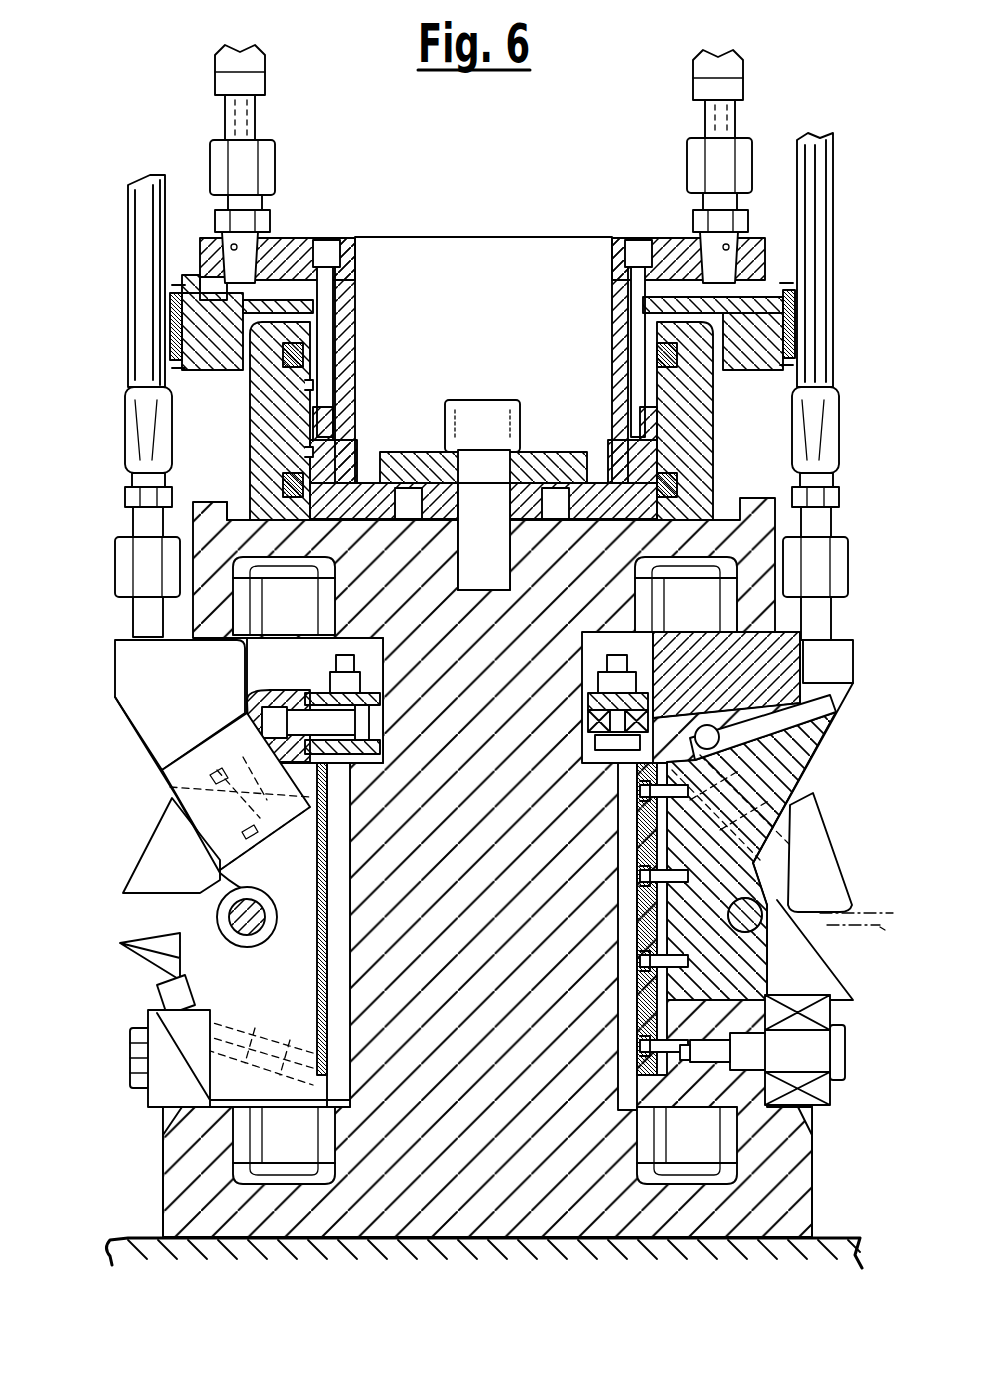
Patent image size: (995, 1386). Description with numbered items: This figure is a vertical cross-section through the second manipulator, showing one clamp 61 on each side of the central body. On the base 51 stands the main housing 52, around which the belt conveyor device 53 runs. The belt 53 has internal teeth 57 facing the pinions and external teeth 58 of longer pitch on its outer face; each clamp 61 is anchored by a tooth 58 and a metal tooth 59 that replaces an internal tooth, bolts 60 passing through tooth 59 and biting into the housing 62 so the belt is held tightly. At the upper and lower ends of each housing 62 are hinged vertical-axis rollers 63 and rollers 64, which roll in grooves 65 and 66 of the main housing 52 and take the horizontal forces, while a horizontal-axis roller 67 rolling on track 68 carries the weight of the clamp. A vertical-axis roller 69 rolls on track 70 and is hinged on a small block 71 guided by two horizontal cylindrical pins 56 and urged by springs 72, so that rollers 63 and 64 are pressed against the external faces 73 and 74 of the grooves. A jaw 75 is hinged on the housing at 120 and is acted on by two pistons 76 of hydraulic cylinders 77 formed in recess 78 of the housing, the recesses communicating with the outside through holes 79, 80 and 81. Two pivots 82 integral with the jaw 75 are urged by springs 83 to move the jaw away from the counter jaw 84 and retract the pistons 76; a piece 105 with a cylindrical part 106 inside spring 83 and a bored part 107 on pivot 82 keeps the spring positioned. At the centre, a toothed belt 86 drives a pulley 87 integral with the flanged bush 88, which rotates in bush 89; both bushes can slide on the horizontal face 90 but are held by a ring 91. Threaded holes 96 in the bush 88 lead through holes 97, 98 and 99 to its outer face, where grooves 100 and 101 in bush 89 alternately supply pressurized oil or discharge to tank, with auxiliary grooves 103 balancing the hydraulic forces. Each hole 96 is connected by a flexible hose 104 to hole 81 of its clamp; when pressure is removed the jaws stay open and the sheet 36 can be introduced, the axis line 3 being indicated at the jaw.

The axis line 3 is at (864, 922).
The sheet to be manipulated 36 is at (880, 927).
The base 51 is at (833, 1240).
The main housing 52 is at (177, 1200).
The belt conveyor device 53 is at (327, 993).
The horizontal cylindrical pins 56 is at (360, 717).
The internal teeth 57 is at (333, 902).
The external teeth 58 is at (647, 1000).
The metal tooth 59 is at (637, 923).
The bolts 60 is at (647, 1047).
The clamp 61 is at (134, 755).
The housing 62 is at (140, 685).
The rollers 63 is at (317, 605).
The rollers 64 is at (323, 1133).
The groove 65 is at (317, 563).
The groove 66 is at (323, 1172).
The horizontal-axis roller 67 is at (167, 1088).
The track 68 is at (167, 1137).
The vertical-axis roller 69 is at (587, 717).
The track 70 is at (385, 663).
The small block 71 is at (383, 743).
The springs 72 is at (310, 700).
The external face 73 is at (223, 608).
The external face 74 is at (233, 1140).
The jaw 75 is at (153, 867).
The pistons 76 is at (177, 788).
The hydraulic cylinders 77 is at (233, 730).
The recess 78 is at (353, 793).
The hole 79 is at (720, 725).
The hole 80 is at (768, 710).
The hole 81 is at (830, 687).
The pivots 82 is at (160, 982).
The springs 83 is at (267, 1033).
The counter jaw 84 is at (133, 932).
The toothed belt 86 is at (793, 307).
The pulley 87 is at (753, 357).
The flanged bush 88 is at (293, 253).
The bush 89 is at (267, 432).
The horizontal face 90 is at (237, 510).
The ring 91 is at (387, 453).
The threaded holes 96 is at (263, 250).
The hole 97 is at (307, 290).
The hole 98 is at (353, 333).
The hole 99 is at (313, 423).
The groove 100 is at (710, 433).
The groove 101 is at (307, 417).
The auxiliary grooves 103 is at (265, 385).
The flexible hose 104 is at (250, 112).
The piece 105 is at (143, 1063).
The cylindrical part 106 is at (263, 1000).
The bored part 107 is at (160, 1000).
The hinge 120 is at (245, 937).